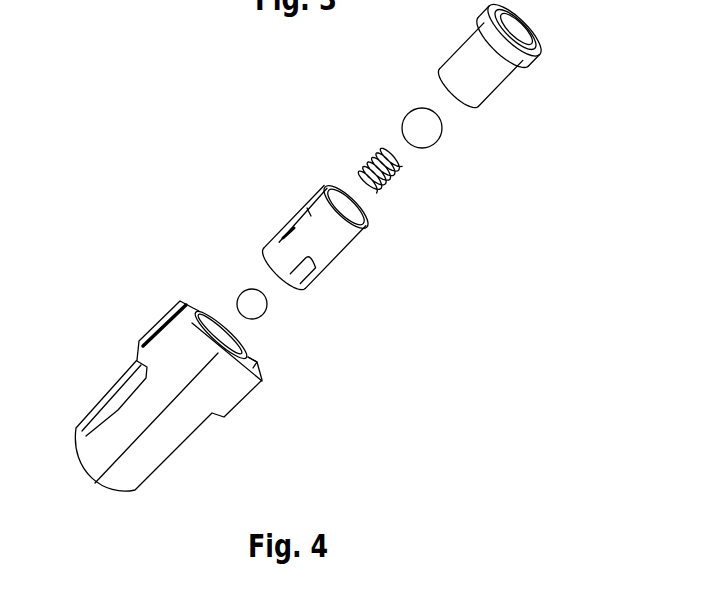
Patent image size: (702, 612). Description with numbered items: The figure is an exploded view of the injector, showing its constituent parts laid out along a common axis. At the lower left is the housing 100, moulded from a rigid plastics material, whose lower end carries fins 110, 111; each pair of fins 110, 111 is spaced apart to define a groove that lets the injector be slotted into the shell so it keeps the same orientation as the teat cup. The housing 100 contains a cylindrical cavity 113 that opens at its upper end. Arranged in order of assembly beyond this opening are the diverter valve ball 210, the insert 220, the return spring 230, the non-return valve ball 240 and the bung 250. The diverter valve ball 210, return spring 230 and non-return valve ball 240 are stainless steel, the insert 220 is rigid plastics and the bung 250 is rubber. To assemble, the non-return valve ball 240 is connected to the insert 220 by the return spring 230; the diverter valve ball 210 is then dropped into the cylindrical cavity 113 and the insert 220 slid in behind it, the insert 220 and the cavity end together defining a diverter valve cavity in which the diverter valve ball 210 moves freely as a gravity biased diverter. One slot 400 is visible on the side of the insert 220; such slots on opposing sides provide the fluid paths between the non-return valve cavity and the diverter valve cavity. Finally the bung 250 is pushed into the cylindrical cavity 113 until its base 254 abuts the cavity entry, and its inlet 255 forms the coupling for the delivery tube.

The housing 100 is at (127, 381).
The fin 110 is at (258, 361).
The fin 111 is at (232, 397).
The cylindrical cavity 113 is at (212, 332).
The diverter valve ball 210 is at (260, 311).
The insert 220 is at (328, 248).
The return spring 230 is at (390, 187).
The non-return valve ball 240 is at (436, 137).
The bung 250 is at (541, 68).
The base 254 is at (532, 62).
The inlet 255 is at (517, 30).
The slot 400 is at (280, 228).